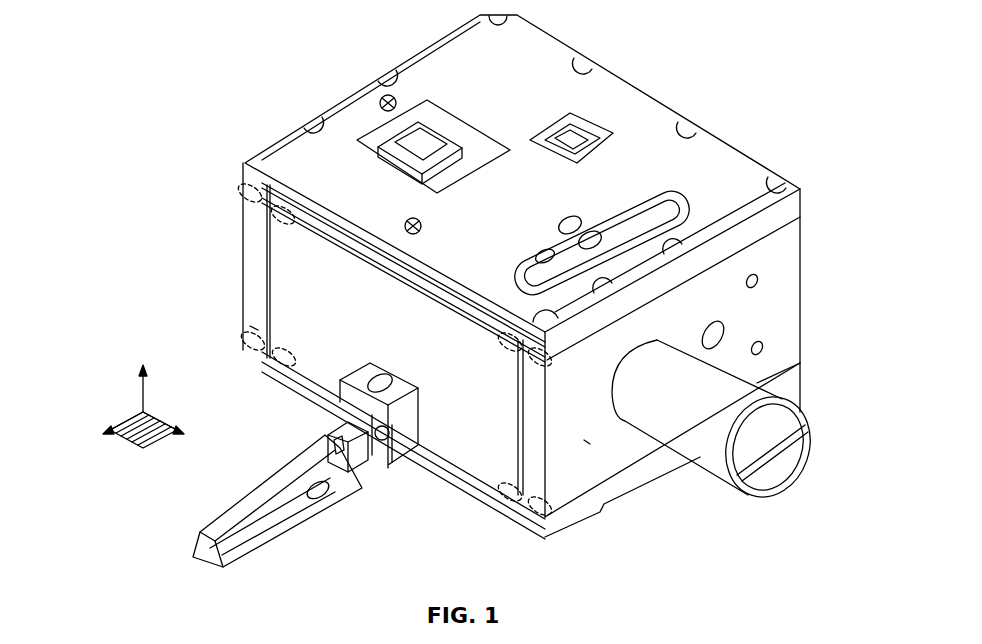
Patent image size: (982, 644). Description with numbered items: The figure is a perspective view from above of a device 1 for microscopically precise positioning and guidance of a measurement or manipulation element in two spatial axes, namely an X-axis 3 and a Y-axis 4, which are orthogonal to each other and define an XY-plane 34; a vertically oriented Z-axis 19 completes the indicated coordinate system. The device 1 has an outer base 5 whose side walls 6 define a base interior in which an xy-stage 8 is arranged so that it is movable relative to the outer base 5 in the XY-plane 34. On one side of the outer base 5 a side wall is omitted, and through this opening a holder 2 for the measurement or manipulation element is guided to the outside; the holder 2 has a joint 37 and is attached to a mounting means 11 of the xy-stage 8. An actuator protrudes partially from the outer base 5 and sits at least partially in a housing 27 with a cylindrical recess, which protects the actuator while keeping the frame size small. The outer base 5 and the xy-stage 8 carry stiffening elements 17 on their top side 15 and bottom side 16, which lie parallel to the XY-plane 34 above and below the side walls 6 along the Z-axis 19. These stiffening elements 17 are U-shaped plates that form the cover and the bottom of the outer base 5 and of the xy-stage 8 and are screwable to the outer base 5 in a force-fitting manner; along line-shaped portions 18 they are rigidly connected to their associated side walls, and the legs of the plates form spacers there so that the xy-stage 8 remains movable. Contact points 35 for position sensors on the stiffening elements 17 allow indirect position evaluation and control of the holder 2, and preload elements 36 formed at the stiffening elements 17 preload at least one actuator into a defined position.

The device 1 is at (800, 34).
The holder 2 is at (287, 540).
The X-axis 3 is at (118, 430).
The Y-axis 4 is at (150, 424).
The outer base 5 is at (782, 263).
The side walls 6 is at (255, 322).
The xy-stage 8 is at (290, 290).
The mounting means 11 is at (410, 430).
The top side 15 is at (338, 92).
The bottom side 16 is at (660, 486).
The stiffening element 17 is at (633, 108).
The line-shaped portions 18 is at (285, 222).
The Z-axis 19 is at (140, 386).
The housing 27 is at (775, 463).
The XY-plane 34 is at (140, 442).
The contact points 35 is at (390, 96).
The preload elements 36 is at (567, 152).
The joint 37 is at (368, 495).